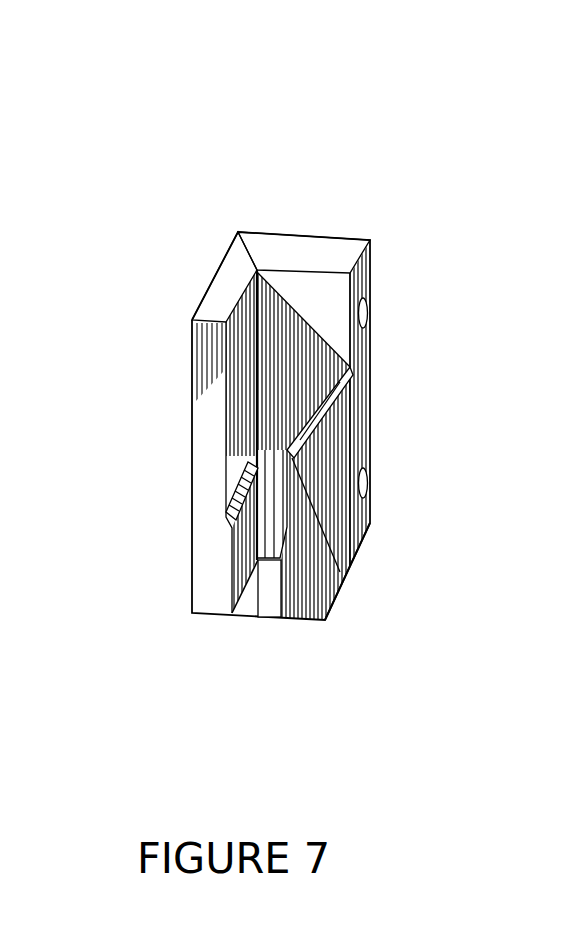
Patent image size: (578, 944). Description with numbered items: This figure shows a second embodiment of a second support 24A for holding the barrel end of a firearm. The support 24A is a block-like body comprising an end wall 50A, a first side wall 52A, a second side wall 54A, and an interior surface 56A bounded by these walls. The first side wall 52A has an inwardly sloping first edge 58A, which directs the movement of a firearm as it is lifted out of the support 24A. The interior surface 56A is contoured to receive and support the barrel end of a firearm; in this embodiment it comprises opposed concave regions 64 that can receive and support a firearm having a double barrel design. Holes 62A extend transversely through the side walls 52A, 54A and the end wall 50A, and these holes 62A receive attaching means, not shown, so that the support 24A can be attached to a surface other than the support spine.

The support 24A is at (302, 108).
The end wall 50A is at (258, 252).
The first side wall 52A is at (352, 512).
The second side wall 54A is at (228, 290).
The interior surface 56A is at (232, 458).
The inwardly sloping first edge 58A is at (333, 567).
The holes 62A is at (370, 467).
The opposed concave regions 64 is at (287, 507).